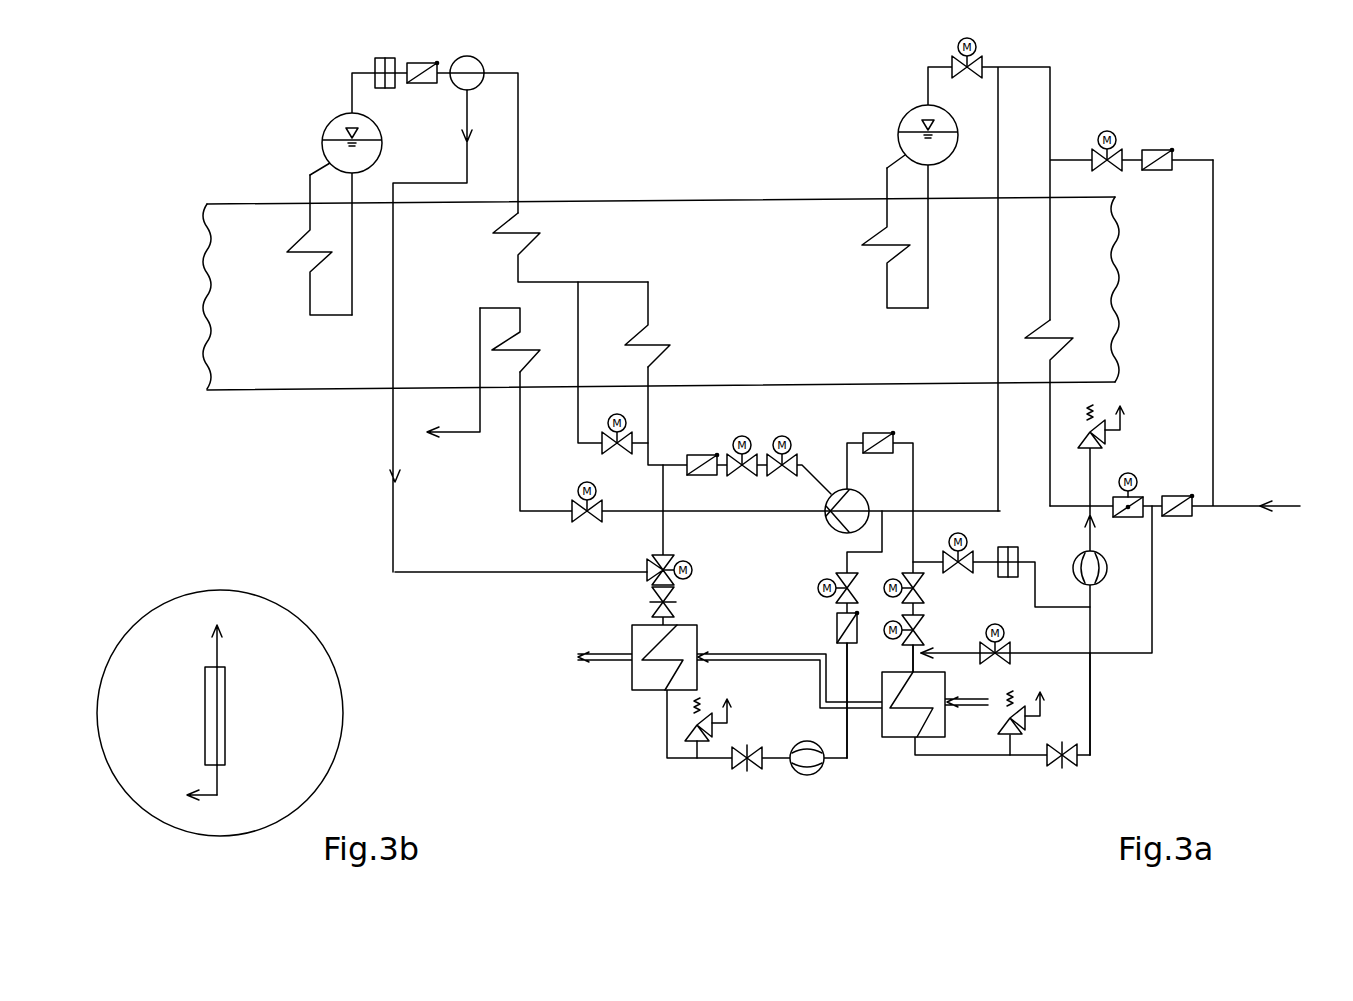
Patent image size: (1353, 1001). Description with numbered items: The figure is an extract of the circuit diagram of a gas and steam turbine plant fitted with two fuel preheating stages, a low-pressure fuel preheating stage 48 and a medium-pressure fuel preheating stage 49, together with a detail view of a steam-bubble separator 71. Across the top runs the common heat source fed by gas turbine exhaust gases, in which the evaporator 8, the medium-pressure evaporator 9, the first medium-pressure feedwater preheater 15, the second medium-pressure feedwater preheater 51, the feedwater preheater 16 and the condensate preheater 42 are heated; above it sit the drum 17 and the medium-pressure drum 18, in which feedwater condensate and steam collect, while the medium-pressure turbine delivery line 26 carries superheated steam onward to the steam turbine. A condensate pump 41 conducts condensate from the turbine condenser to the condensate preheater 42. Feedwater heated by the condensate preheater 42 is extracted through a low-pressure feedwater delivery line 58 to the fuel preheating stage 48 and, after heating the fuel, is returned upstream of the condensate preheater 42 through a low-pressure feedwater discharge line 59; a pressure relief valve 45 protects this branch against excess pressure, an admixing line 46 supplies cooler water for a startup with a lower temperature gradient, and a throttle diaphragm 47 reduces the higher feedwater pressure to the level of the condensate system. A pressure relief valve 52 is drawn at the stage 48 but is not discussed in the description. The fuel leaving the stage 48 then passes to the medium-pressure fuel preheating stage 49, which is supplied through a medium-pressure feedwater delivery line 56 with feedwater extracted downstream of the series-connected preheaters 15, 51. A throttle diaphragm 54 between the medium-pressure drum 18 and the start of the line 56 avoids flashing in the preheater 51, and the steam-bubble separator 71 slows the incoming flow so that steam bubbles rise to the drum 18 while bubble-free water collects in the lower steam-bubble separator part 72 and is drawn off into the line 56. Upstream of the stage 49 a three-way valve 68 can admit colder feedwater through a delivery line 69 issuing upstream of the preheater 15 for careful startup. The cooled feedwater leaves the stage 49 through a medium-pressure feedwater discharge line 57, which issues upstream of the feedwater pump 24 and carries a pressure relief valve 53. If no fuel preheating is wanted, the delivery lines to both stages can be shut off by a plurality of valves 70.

In FIG. 3a, the evaporator 8 is at (887, 292).
In FIG. 3a, the medium-pressure evaporator 9 is at (310, 302).
In FIG. 3a, the medium-pressure feedwater preheater 15 is at (648, 307).
In FIG. 3a, the feedwater preheater 16 is at (480, 333).
In FIG. 3a, the drum 17 is at (905, 118).
In FIG. 3a, the medium-pressure drum 18 is at (323, 140).
In FIG. 3b, the medium-pressure drum 18 is at (220, 632).
In FIG. 3a, the feedwater pump 24 is at (830, 530).
In FIG. 3a, the medium-pressure turbine delivery line 26 is at (758, 190).
In FIG. 3a, the condensate pump 41 is at (1228, 500).
In FIG. 3a, the condensate preheater 42 is at (1052, 300).
In FIG. 3a, the pressure relief valve 45 is at (1080, 440).
In FIG. 3a, the admixing line 46 is at (1152, 637).
In FIG. 3a, the throttle diaphragm 47 is at (1017, 530).
In FIG. 3a, the fuel preheating stage 48 is at (898, 737).
In FIG. 3a, the medium-pressure fuel preheating stage 49 is at (643, 692).
In FIG. 3b, the medium-pressure fuel preheating stage 49 is at (182, 800).
In FIG. 3a, the second medium-pressure feedwater preheater 51 is at (520, 270).
In FIG. 3b, the second medium-pressure feedwater preheater 51 is at (225, 700).
In FIG. 3a, the pressure relief valve 52 is at (1022, 707).
In FIG. 3a, the pressure relief valve 53 is at (703, 715).
In FIG. 3a, the throttle diaphragm 54 is at (386, 58).
In FIG. 3a, the medium-pressure feedwater delivery line 56 is at (490, 572).
In FIG. 3b, the medium-pressure feedwater delivery line 56 is at (217, 785).
In FIG. 3a, the medium-pressure feedwater discharge line 57 is at (849, 743).
In FIG. 3a, the low-pressure feedwater delivery line 58 is at (910, 656).
In FIG. 3a, the low-pressure feedwater discharge line 59 is at (1093, 735).
In FIG. 3a, the three-way valve 68 is at (668, 555).
In FIG. 3a, the delivery line 69 is at (663, 513).
In FIG. 3a, the valves 70 is at (672, 612).
In FIG. 3a, the steam-bubble separator 71 is at (480, 58).
In FIG. 3b, the steam-bubble separator 71 is at (205, 722).
In FIG. 3b, the lower steam-bubble separator part 72 is at (225, 738).